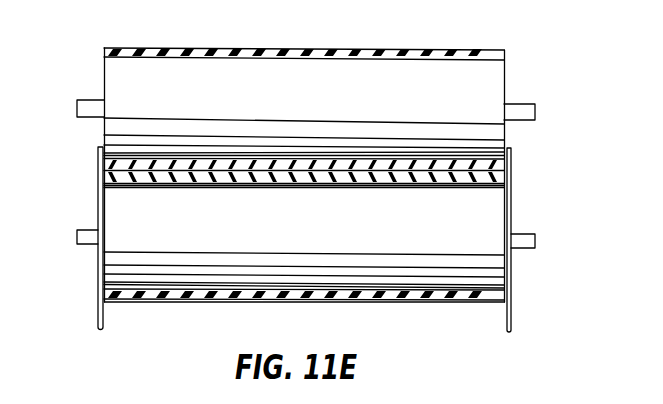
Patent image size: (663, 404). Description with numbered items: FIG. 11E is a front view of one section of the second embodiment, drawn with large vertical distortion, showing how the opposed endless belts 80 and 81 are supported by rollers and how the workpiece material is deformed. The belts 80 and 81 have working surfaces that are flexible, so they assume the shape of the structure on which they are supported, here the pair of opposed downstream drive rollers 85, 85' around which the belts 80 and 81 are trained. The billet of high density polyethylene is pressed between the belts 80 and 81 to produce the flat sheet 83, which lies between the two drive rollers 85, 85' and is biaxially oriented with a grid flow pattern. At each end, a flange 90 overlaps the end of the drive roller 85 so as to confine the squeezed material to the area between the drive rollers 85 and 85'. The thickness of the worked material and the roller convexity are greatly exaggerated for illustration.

The endless belt 80 is at (472, 189).
The endless belt 81 is at (405, 51).
The flat sheet 83 is at (290, 186).
The downstream drive roller 85 is at (304, 86).
The downstream drive roller 85' is at (304, 255).
The flange 90 is at (97, 303).